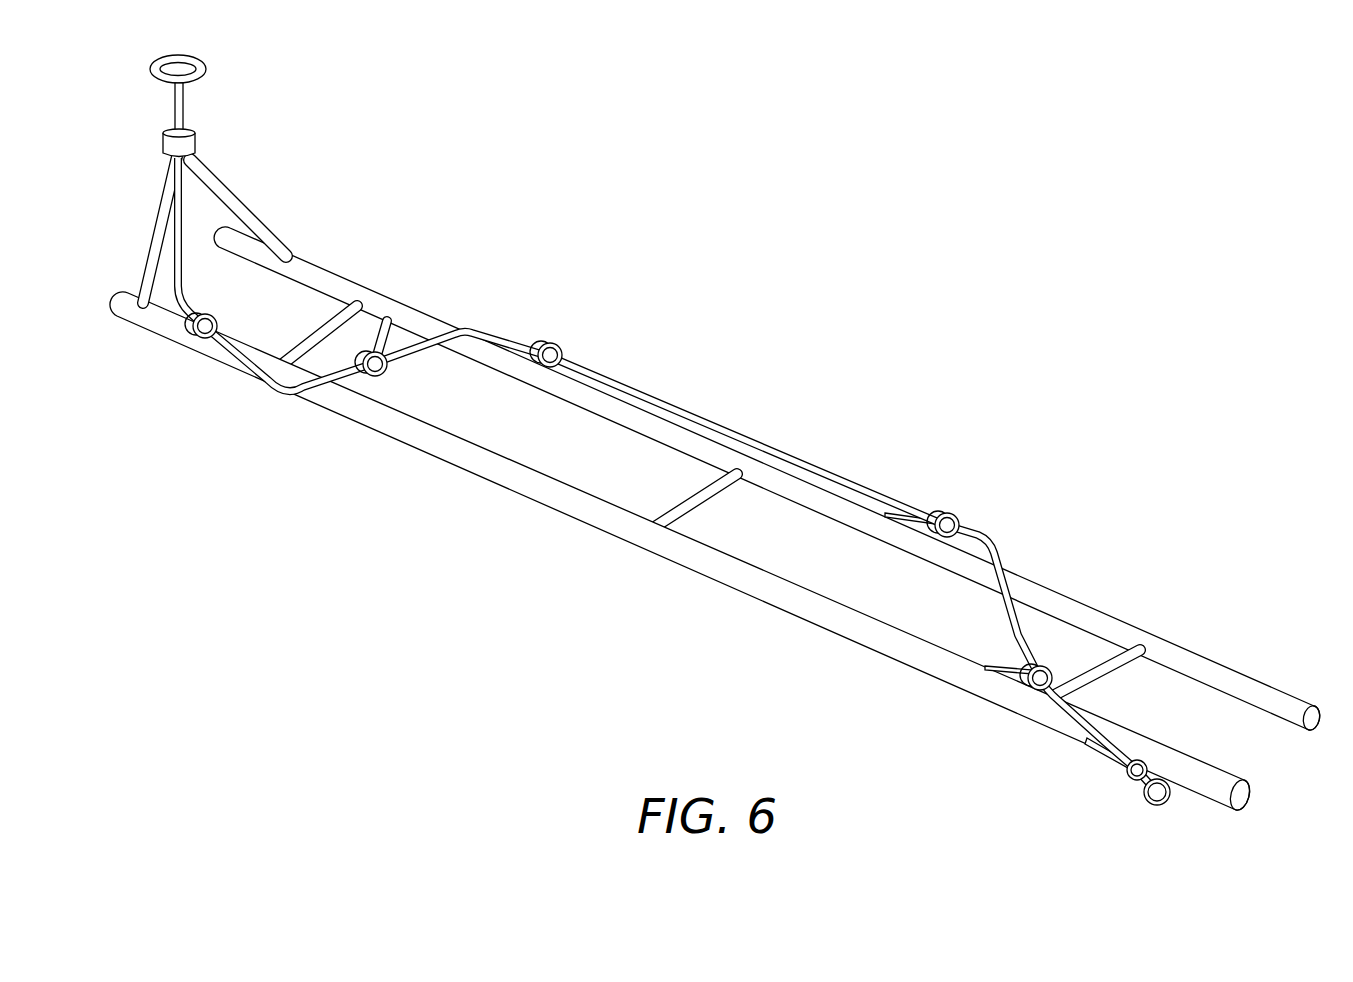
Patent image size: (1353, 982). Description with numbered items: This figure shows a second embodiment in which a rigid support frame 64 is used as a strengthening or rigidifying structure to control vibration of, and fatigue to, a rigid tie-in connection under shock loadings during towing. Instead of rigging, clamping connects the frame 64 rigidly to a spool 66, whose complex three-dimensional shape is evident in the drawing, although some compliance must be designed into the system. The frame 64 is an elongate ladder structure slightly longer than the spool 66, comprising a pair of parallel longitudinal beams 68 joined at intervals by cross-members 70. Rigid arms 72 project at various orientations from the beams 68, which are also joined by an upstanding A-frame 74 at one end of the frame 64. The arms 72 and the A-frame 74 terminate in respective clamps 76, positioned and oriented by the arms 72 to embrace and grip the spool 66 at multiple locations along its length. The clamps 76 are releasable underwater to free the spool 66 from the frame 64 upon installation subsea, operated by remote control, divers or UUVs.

The support frame 64 is at (440, 503).
The spool 66 is at (750, 440).
The longitudinal beams 68 is at (716, 519).
The cross-members 70 is at (303, 335).
The rigid arms 72 is at (389, 328).
The A-frame 74 is at (233, 190).
The clamps 76 is at (162, 148).